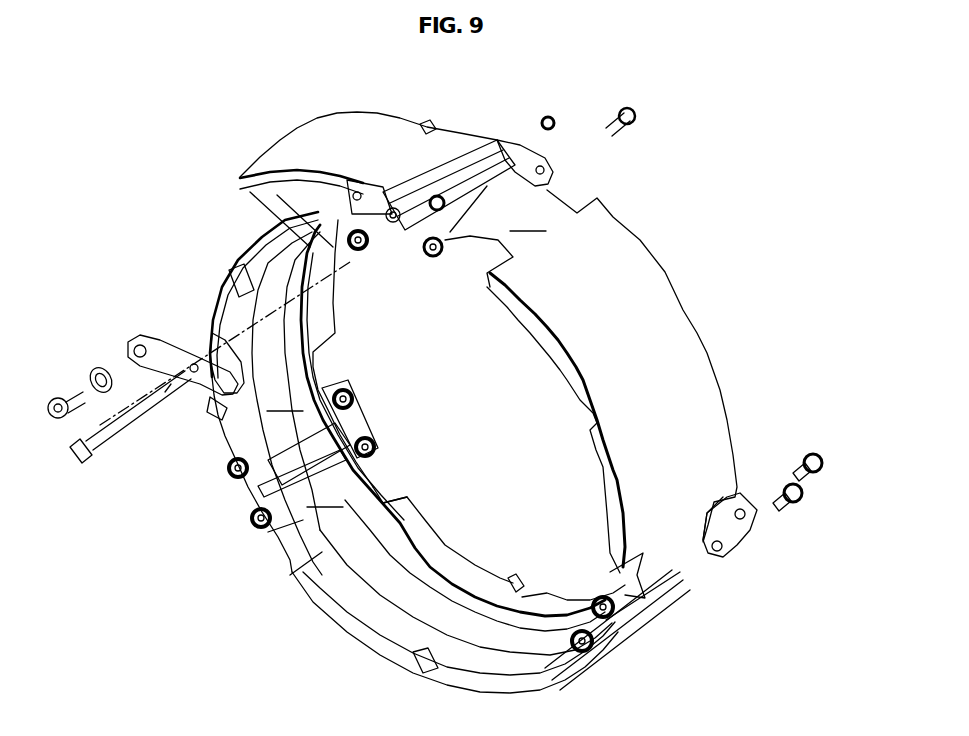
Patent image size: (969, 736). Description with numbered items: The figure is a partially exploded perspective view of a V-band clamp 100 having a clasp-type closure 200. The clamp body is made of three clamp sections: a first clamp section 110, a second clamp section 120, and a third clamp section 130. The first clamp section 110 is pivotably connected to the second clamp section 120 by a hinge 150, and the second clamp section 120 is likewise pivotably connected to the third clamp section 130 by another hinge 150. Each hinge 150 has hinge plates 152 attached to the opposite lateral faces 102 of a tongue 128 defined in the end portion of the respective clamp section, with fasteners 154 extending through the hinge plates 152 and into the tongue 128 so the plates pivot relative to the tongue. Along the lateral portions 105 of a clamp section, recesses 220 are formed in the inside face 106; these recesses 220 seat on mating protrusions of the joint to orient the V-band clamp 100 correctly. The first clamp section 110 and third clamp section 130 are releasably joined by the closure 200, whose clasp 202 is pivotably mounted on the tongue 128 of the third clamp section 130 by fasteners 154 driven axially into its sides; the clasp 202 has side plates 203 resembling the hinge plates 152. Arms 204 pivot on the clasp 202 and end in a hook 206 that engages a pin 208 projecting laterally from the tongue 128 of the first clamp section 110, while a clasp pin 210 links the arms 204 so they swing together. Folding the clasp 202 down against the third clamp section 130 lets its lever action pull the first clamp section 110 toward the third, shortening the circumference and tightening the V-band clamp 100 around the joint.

The V-band clamp 100 is at (131, 112).
The lateral faces 102 is at (318, 367).
The lateral portions 105 is at (443, 553).
The inside face 106 is at (326, 313).
The first clamp section 110 is at (685, 311).
The second clamp section 120 is at (345, 618).
The tongue 128 is at (717, 590).
The third clamp section 130 is at (260, 246).
The hinge 150 is at (226, 495).
The hinge plates 152 is at (350, 427).
The fasteners 154 is at (350, 246).
The closure 200 is at (520, 118).
The clasp 202 is at (355, 133).
The side plates 203 is at (357, 200).
The arms 204 is at (527, 147).
The hook 206 is at (545, 167).
The pin 208 is at (613, 132).
The clasp pin 210 is at (110, 430).
The recesses 220 is at (524, 578).